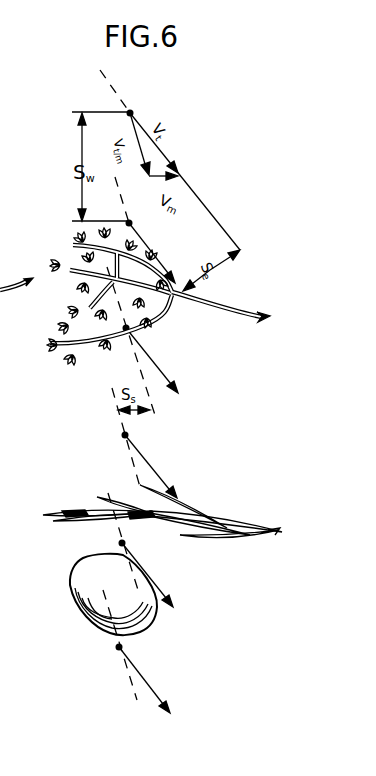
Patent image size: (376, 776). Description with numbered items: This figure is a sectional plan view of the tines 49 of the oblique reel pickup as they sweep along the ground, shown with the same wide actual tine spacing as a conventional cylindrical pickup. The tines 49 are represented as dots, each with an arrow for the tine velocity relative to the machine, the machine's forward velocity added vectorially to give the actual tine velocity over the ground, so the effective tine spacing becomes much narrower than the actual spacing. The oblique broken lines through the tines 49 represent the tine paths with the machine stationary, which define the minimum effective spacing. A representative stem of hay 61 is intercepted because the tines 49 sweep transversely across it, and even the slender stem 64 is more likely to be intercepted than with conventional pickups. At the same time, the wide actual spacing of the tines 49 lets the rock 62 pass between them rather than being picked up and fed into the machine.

The stem of hay 61 is at (73, 243).
The tines 49 is at (121, 435).
The slender stem 64 is at (85, 505).
The rock 62 is at (80, 559).